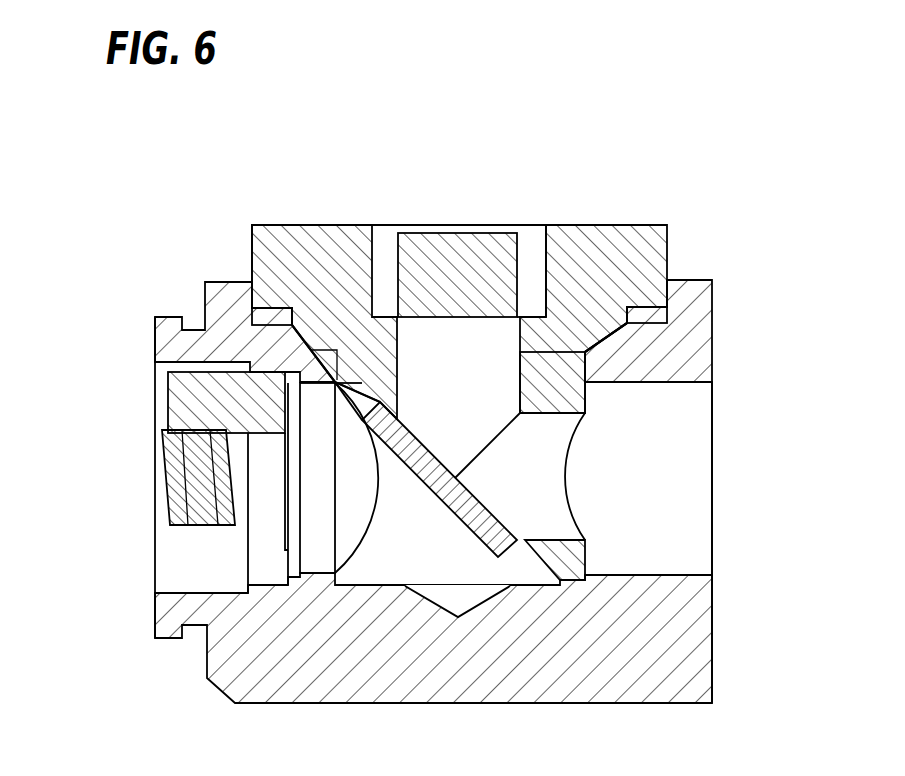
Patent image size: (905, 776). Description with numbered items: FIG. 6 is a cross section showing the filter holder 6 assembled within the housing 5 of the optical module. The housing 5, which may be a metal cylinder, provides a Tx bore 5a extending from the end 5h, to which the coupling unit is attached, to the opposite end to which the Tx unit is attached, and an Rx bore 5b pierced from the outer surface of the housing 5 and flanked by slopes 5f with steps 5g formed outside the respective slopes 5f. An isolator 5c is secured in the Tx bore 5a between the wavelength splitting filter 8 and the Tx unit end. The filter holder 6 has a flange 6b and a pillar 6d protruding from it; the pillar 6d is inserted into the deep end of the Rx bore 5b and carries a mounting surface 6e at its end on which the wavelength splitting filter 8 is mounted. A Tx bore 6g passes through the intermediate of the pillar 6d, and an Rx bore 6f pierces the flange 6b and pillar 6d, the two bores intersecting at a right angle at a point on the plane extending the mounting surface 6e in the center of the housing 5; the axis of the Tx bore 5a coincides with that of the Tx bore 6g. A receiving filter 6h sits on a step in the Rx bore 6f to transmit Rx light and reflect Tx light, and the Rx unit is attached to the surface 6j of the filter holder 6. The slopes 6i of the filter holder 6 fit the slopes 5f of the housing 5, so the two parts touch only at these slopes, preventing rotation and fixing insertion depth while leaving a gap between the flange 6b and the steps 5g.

The housing 5 is at (716, 282).
The Tx bore 5a is at (698, 493).
The Rx bore 5b is at (385, 562).
The isolator 5c is at (163, 490).
The slopes 5f is at (300, 343).
The steps 5g is at (667, 312).
The end 5h is at (712, 602).
The filter holder 6 is at (648, 222).
The flange 6b is at (650, 243).
The pillar 6d is at (583, 405).
The mounting surface 6e is at (540, 560).
The Rx bore 6f is at (492, 357).
The Tx bore 6g is at (558, 492).
The receiving filter 6h is at (462, 236).
The slope 6i is at (260, 340).
The surface 6j is at (262, 225).
The wavelength splitting filter 8 is at (437, 493).